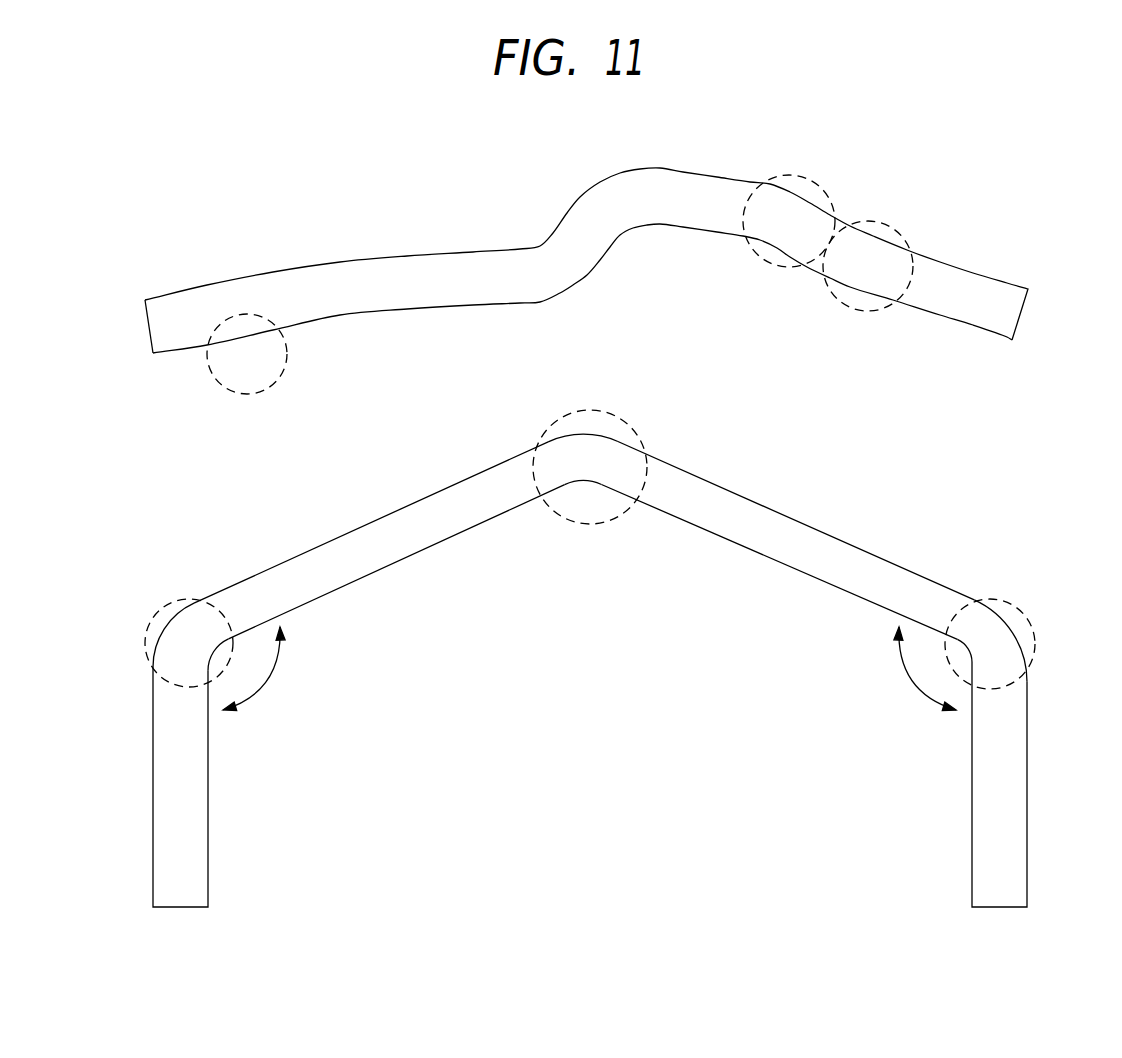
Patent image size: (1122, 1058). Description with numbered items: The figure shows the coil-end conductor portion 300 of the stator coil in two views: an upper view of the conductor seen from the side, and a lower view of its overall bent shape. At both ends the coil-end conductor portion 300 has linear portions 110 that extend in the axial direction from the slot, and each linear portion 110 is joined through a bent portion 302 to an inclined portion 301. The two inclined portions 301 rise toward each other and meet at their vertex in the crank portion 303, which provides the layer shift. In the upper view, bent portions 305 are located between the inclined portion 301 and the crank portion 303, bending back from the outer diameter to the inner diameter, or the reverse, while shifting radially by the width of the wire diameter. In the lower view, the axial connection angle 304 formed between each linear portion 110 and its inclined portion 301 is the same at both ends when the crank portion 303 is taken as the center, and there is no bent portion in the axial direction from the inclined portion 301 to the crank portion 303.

The coil-end conductor portion 300 is at (303, 233).
The inclined portion 301 is at (403, 512).
The bent portion 302 is at (247, 313).
The crank portion 303 is at (627, 427).
The axial connection angle 304 is at (589, 674).
The bent portion 305 is at (820, 185).
The linear portion 110 is at (200, 822).